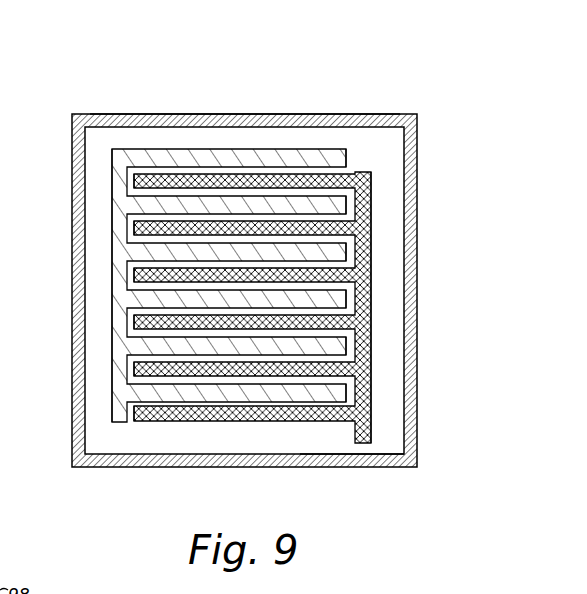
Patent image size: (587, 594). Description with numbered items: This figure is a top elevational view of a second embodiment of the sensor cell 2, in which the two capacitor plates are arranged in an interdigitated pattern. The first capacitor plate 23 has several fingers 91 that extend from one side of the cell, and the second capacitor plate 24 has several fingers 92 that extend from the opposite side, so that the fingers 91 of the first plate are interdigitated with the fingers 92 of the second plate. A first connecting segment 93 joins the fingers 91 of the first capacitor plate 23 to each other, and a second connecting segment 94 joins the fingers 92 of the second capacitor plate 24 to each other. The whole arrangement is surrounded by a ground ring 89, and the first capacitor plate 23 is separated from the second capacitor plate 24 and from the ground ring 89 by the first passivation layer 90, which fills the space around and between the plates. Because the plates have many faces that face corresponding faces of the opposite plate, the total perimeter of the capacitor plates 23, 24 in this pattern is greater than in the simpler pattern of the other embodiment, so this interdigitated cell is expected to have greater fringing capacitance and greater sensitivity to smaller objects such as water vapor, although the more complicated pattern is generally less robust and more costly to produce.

The sensor cell 2 is at (330, 78).
The ground ring 89 is at (174, 115).
The first passivation layer 90 is at (385, 438).
The first connecting segment 93 is at (111, 258).
The first capacitor plate 23 is at (99, 303).
The second capacitor plate 24 is at (382, 248).
The second connecting segment 94 is at (370, 222).
The fingers of the first capacitor plate 91 is at (343, 248).
The fingers of the second capacitor plate 92 is at (134, 228).